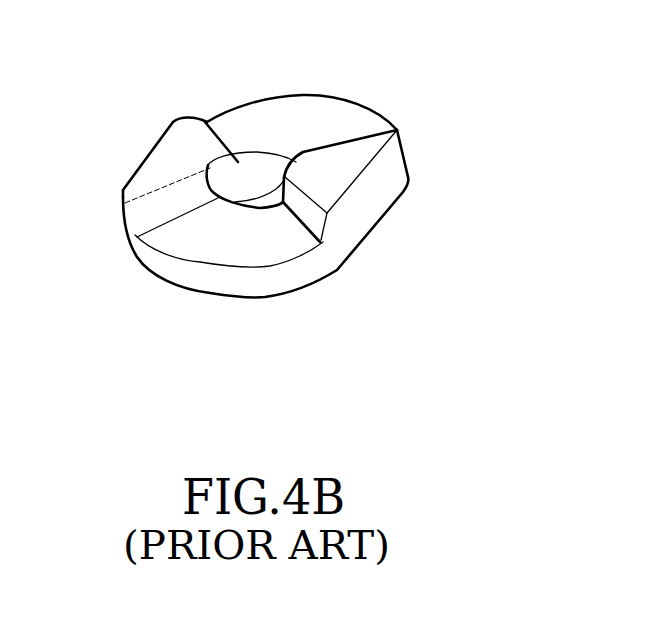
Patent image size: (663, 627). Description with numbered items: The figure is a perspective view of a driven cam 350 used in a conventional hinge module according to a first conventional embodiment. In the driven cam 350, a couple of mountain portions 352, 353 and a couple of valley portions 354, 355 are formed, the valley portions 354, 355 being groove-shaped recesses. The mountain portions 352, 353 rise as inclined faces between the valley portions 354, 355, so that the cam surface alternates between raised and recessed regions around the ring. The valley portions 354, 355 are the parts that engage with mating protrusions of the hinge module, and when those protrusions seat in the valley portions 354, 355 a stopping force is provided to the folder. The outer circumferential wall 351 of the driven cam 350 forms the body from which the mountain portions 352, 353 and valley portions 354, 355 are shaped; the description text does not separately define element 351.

The driven cam 350 is at (424, 143).
The outer circumferential wall 351 is at (285, 275).
The mountain portion 352 is at (345, 163).
The mountain portion 353 is at (168, 158).
The valley portion 354 is at (270, 98).
The valley portion 355 is at (223, 252).